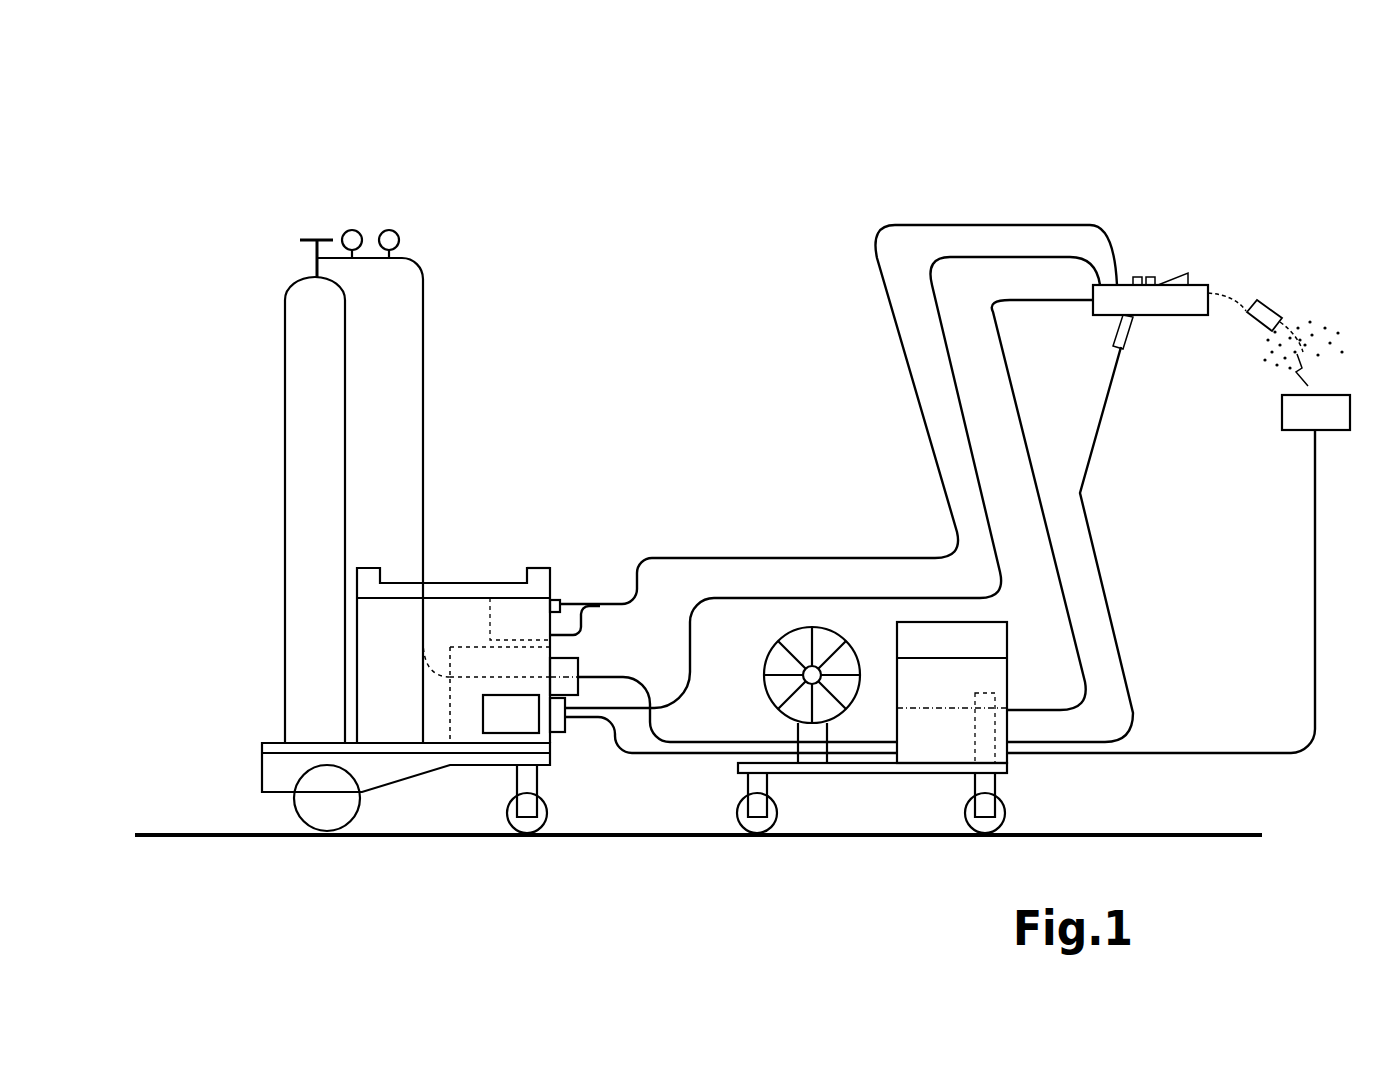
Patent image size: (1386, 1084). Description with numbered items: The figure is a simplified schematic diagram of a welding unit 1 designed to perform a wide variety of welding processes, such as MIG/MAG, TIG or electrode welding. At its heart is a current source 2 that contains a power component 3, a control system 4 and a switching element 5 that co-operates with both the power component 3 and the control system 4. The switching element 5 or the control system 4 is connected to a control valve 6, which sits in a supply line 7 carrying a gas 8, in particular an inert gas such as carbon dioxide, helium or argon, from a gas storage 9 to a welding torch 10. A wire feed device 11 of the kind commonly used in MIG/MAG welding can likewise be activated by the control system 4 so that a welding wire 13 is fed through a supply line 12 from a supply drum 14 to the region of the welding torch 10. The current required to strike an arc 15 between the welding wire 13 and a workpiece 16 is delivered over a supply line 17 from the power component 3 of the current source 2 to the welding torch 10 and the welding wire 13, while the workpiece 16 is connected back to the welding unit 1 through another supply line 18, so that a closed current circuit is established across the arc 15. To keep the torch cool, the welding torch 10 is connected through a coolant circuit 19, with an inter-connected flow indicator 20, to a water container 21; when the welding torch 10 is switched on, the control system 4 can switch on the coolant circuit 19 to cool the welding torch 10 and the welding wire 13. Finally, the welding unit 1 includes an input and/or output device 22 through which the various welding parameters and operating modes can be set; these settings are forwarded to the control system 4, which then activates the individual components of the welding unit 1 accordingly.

The welding unit 1 is at (213, 220).
The current source 2 is at (504, 450).
The power component 3 is at (503, 722).
The control system 4 is at (448, 707).
The switching element 5 is at (566, 750).
The control valve 6 is at (565, 690).
The supply line 7 is at (1127, 660).
The gas 8 is at (1286, 291).
The gas storage 9 is at (315, 357).
The welding torch 10 is at (1200, 253).
The wire feed device 11 is at (1057, 801).
The supply line 12 is at (1052, 537).
The welding wire 13 is at (917, 712).
The supply drum 14 is at (820, 640).
The arc 15 is at (1286, 381).
The workpiece 16 is at (1325, 432).
The supply line 17 is at (852, 596).
The supply line 18 is at (1318, 614).
The coolant circuit 19 is at (695, 556).
The flow indicator 20 is at (575, 603).
The water container 21 is at (510, 610).
The input and/or output device 22 is at (545, 583).